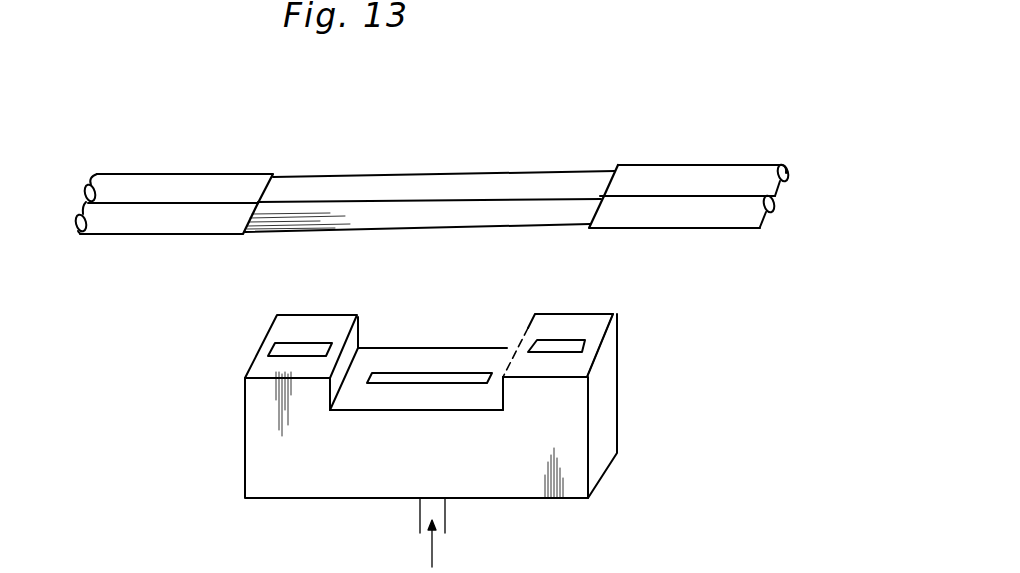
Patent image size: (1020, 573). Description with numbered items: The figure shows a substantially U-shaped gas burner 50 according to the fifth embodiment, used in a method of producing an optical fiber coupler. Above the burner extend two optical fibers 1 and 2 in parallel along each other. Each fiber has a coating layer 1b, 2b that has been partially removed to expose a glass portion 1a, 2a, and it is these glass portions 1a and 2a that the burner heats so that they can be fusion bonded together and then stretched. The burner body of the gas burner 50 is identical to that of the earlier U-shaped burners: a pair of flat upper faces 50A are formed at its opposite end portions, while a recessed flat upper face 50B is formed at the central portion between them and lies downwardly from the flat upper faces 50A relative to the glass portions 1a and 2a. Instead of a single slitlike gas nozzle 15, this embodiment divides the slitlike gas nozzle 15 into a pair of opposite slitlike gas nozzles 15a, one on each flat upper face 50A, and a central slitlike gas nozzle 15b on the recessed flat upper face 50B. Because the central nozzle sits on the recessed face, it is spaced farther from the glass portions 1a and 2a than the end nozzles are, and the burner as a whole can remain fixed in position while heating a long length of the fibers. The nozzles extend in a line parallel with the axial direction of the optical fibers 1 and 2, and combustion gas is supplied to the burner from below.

The optical fiber 1 is at (668, 158).
The glass portion 1a is at (497, 178).
The coating layer 1b is at (185, 181).
The optical fiber 2 is at (671, 229).
The glass portion 2a is at (430, 213).
The coating layer 2b is at (170, 222).
The slitlike gas nozzle 15 is at (567, 333).
The opposite slitlike gas nozzles 15a is at (276, 349).
The central slitlike gas nozzle 15b is at (428, 375).
The gas burner 50 is at (618, 422).
The flat upper faces 50A is at (297, 330).
The recessed flat upper face 50B is at (473, 410).